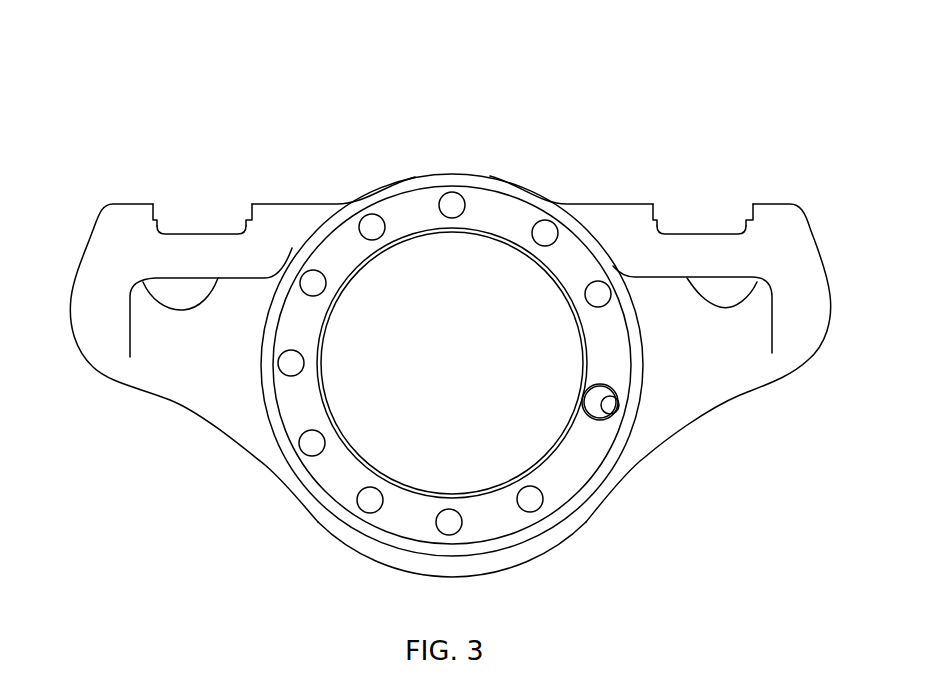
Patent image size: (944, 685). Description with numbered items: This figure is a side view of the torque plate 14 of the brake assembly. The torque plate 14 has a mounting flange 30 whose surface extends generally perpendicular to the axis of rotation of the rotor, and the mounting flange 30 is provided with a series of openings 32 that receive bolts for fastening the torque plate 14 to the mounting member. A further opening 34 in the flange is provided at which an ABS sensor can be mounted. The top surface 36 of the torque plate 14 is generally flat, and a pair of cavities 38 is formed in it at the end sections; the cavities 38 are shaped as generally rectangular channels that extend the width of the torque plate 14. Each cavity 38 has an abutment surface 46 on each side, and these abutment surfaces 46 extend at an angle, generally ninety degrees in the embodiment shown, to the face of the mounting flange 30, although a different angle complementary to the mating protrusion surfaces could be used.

The torque plate 14 is at (750, 110).
The mounting flange 30 is at (575, 452).
The openings 32 is at (370, 500).
The opening 34 is at (605, 410).
The top surface 36 is at (531, 190).
The cavities 38 is at (183, 234).
The abutment surfaces 46 is at (155, 220).